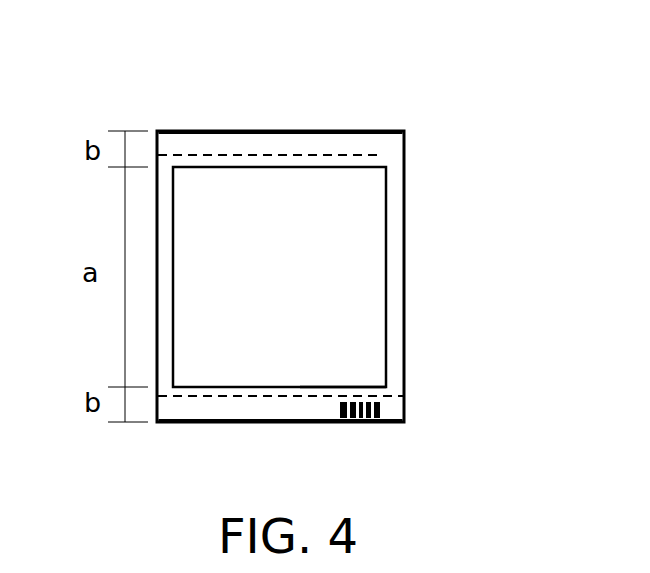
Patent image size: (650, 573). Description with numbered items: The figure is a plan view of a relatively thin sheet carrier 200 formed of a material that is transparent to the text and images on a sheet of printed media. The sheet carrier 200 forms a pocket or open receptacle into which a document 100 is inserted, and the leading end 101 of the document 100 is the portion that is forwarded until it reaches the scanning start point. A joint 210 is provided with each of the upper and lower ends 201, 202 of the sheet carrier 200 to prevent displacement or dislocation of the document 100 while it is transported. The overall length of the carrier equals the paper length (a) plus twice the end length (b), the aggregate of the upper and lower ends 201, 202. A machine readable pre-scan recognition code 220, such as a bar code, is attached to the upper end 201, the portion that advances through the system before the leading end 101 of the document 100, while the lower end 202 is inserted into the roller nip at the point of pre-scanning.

The sheet carrier 200 is at (367, 130).
The lower end 202 is at (312, 148).
The joint 210 is at (378, 155).
The document 100 is at (370, 313).
The leading end 101 is at (348, 387).
The upper end 201 is at (258, 410).
The pre-scan recognition code 220 is at (380, 410).